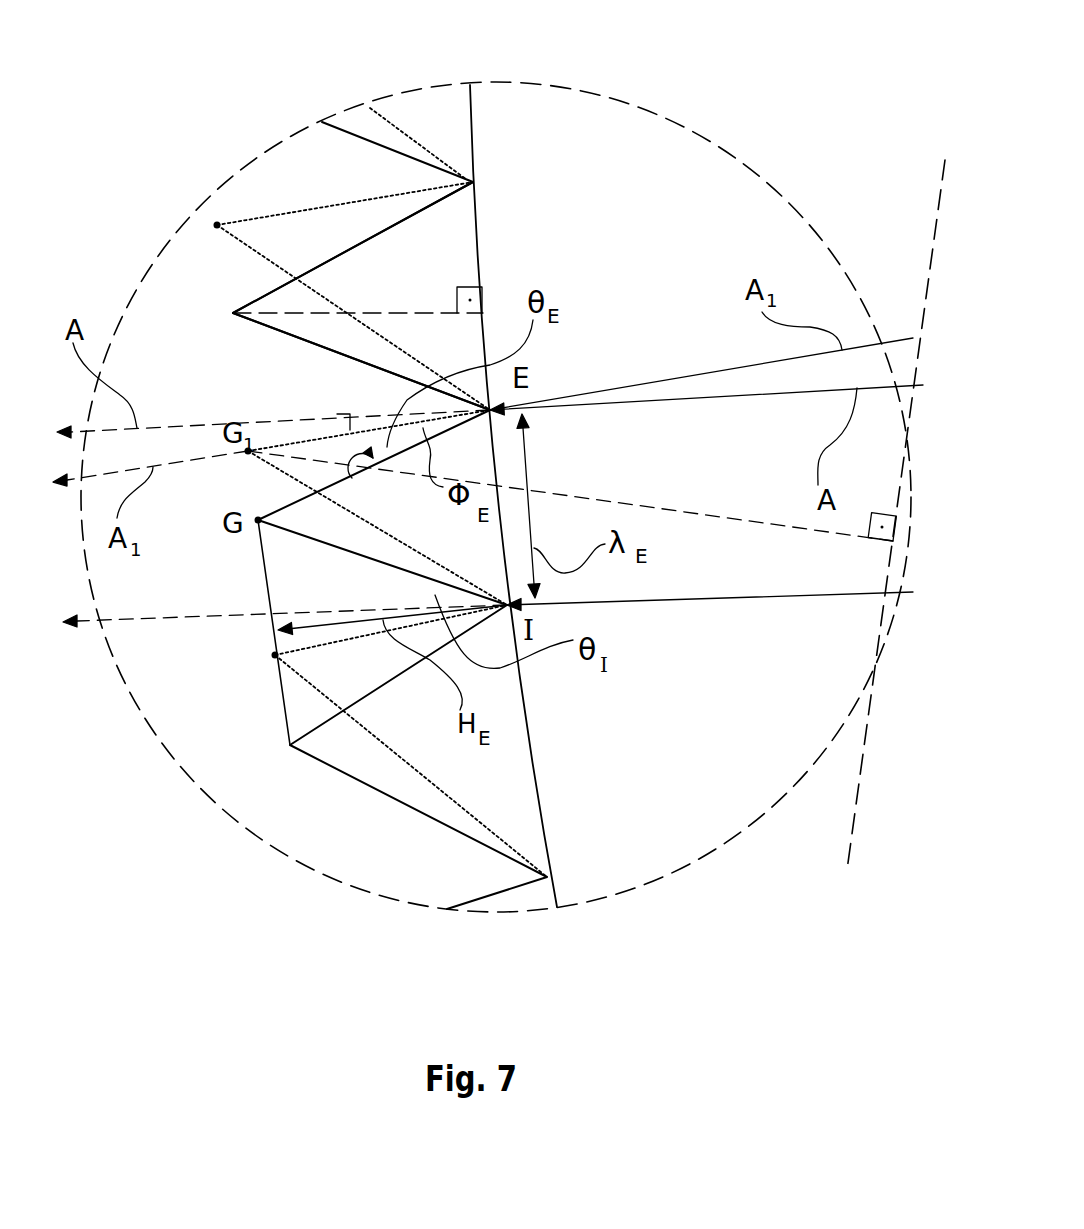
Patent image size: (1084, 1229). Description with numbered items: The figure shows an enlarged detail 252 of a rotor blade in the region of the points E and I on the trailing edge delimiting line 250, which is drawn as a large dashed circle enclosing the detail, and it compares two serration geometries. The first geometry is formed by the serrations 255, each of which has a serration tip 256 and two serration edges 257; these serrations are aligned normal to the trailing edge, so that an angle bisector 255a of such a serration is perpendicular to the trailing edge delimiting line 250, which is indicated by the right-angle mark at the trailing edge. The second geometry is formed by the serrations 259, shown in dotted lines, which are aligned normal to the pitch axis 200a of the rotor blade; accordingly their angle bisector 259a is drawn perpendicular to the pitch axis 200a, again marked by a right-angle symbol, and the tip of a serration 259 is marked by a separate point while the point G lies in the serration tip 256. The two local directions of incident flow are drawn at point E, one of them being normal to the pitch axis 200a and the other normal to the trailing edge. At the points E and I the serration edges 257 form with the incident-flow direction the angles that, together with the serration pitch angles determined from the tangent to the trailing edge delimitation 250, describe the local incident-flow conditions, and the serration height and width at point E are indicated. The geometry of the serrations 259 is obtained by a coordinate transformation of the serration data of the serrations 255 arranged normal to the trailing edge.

The pitch axis 200a is at (933, 237).
The trailing edge delimitation 250 is at (486, 130).
The enlarged detail 252 is at (783, 742).
The serrations 255 is at (487, 800).
The angle bisector 255a is at (380, 313).
The serration tip 256 is at (233, 313).
The serration edge 257 is at (402, 603).
The serrations 259 is at (313, 228).
The angle bisector 259a is at (653, 507).